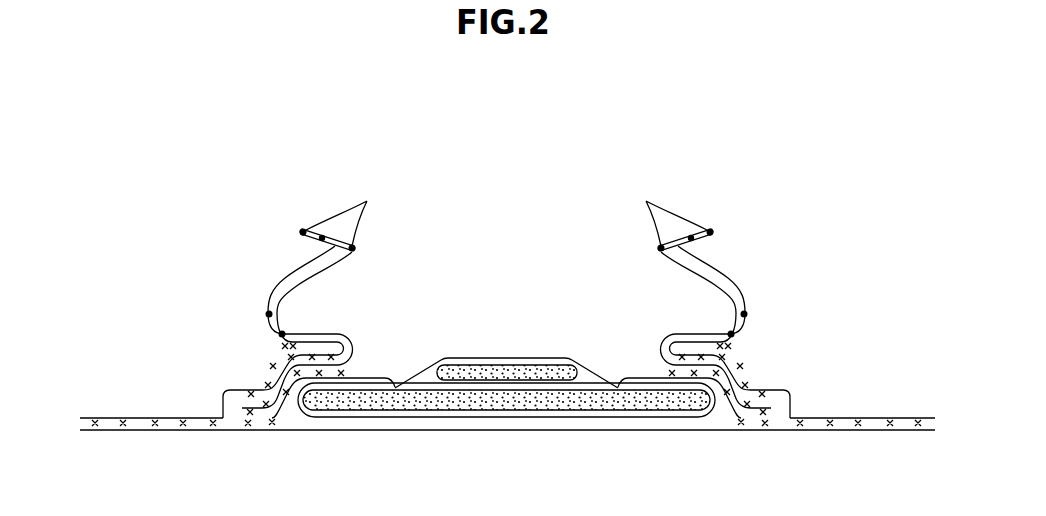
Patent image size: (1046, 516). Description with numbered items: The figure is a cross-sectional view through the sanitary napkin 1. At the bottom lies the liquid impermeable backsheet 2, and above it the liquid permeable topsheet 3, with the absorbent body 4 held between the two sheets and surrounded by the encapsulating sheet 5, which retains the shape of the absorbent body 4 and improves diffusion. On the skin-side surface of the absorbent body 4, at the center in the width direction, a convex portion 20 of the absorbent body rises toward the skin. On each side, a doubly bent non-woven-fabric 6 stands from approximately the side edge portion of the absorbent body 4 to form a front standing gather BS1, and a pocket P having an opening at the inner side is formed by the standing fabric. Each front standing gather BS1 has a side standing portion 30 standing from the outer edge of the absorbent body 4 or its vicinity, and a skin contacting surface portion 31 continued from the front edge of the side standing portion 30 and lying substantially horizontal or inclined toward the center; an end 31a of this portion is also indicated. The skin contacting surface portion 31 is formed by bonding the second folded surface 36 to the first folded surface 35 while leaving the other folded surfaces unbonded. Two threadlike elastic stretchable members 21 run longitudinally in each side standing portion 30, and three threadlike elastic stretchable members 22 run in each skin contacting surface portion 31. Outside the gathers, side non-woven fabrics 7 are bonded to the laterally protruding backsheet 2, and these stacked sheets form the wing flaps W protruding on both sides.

The sanitary napkin 1 is at (210, 192).
The liquid impermeable backsheet 2 is at (653, 432).
The liquid permeable topsheet 3 is at (545, 357).
The absorbent body 4 is at (514, 400).
The encapsulating sheet 5 is at (583, 386).
The non-woven-fabric for forming standing gathers 6 is at (364, 339).
The side non-woven fabric 7 is at (237, 390).
The convex portion of an absorbent body 20 is at (482, 352).
The threadlike elastic stretchable member 21 is at (285, 333).
The threadlike elastic stretchable member 22 is at (506, 211).
The side standing portion 30 is at (253, 284).
The skin contacting surface portion 31 is at (312, 243).
The end of bar portion 31a is at (300, 231).
The first folded surface 35 is at (303, 363).
The second folded surface 36 is at (322, 337).
The wing flap W is at (160, 411).
The front standing gather BS1 is at (386, 242).
The pocket P is at (325, 297).